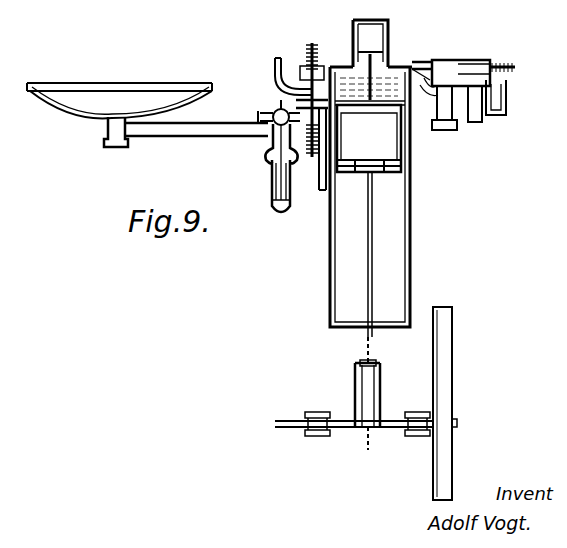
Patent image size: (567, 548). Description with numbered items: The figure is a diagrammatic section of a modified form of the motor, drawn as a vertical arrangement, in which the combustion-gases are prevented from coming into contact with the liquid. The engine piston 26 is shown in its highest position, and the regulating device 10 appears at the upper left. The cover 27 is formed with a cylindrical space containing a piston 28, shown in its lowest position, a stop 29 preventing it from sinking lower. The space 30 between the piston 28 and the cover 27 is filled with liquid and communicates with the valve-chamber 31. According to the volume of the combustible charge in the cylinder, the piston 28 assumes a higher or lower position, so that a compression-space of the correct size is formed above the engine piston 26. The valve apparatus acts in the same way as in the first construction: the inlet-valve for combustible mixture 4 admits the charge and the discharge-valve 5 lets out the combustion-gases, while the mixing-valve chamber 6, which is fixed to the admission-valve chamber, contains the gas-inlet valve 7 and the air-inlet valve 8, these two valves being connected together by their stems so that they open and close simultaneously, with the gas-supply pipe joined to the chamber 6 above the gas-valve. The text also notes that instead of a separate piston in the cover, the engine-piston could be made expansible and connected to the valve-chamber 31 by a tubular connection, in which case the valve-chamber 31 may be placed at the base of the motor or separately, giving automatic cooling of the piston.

The inlet-valve for combustible mixture 4 is at (312, 116).
The discharge-valve 5 is at (292, 96).
The mixing-valve chamber 6 is at (265, 158).
The gas-inlet valve 7 is at (278, 110).
The air-inlet valve 8 is at (270, 180).
The regulating device 10 is at (119, 115).
The piston 26 is at (369, 155).
The cover 27 is at (415, 62).
The piston 28 is at (374, 110).
The stop 29 is at (378, 57).
The space 30 is at (352, 66).
The valve-chamber 31 is at (448, 70).